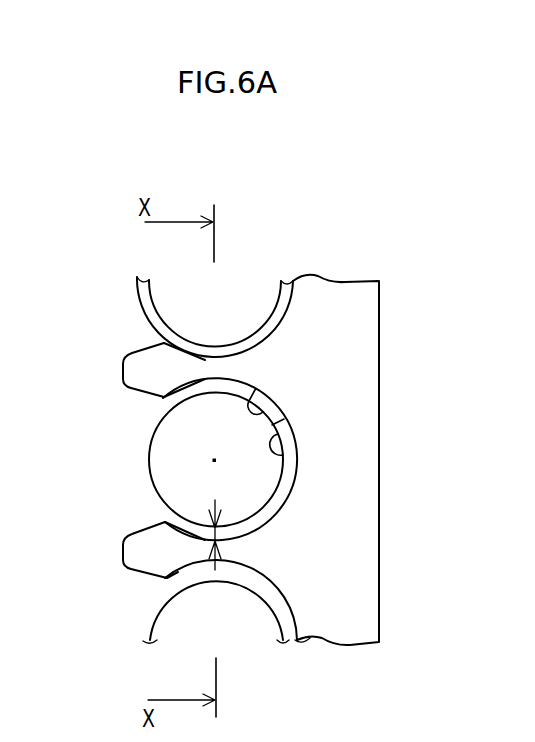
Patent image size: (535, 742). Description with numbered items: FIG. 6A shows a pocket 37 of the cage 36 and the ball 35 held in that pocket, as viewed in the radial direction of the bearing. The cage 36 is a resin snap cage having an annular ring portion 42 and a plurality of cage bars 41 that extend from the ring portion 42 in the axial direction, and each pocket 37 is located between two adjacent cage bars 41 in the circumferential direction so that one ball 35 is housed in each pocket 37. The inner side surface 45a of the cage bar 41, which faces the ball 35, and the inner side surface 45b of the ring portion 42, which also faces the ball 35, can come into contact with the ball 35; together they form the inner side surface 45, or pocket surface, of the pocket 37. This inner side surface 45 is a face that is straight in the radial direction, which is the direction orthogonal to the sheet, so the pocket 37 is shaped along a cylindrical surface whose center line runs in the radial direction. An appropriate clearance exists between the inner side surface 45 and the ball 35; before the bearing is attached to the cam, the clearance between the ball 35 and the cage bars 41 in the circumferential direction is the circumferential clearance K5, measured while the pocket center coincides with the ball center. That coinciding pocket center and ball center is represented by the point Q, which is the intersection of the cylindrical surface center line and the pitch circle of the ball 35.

The ball 35 is at (170, 313).
The cage bar 41 is at (132, 370).
The ring portion 42 is at (360, 489).
The pocket 37 is at (131, 504).
The cage 36 is at (121, 578).
The inner side surface 45 is at (436, 353).
The inner side surface of the cage bar 45a is at (278, 418).
The inner side surface of the ring portion 45b is at (292, 431).
The point Q is at (214, 460).
The circumferential clearance K5 is at (216, 532).